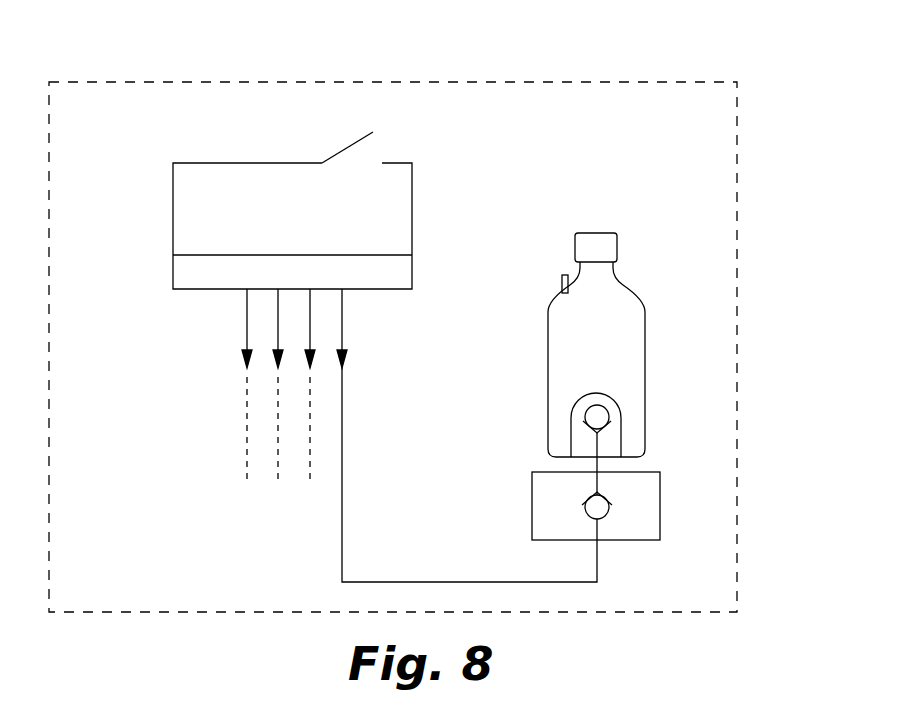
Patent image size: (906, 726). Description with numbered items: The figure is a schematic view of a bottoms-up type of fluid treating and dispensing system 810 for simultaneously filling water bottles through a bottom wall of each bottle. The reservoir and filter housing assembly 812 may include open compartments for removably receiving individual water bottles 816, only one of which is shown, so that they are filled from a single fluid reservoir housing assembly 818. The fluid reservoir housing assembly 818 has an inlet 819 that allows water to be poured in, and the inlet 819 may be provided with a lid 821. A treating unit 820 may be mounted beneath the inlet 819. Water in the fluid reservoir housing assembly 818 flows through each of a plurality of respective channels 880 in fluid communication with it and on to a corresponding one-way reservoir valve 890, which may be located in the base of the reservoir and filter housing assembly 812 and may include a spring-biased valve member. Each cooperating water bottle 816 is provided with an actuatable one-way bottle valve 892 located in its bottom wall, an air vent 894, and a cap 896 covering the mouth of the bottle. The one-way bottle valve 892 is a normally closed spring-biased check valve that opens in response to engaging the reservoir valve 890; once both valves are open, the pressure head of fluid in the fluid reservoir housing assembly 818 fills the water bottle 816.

The fluid treating and dispensing system 810 is at (672, 63).
The reservoir and filter housing assembly 812 is at (378, 302).
The water bottle 816 is at (631, 298).
The fluid reservoir housing assembly 818 is at (173, 202).
The inlet 819 is at (372, 165).
The treating unit 820 is at (173, 276).
The lid 821 is at (349, 143).
The channels 880 is at (278, 324).
The one-way reservoir valve 890 is at (601, 516).
The one-way bottle valve 892 is at (606, 411).
The air vent 894 is at (562, 279).
The cap 896 is at (597, 240).